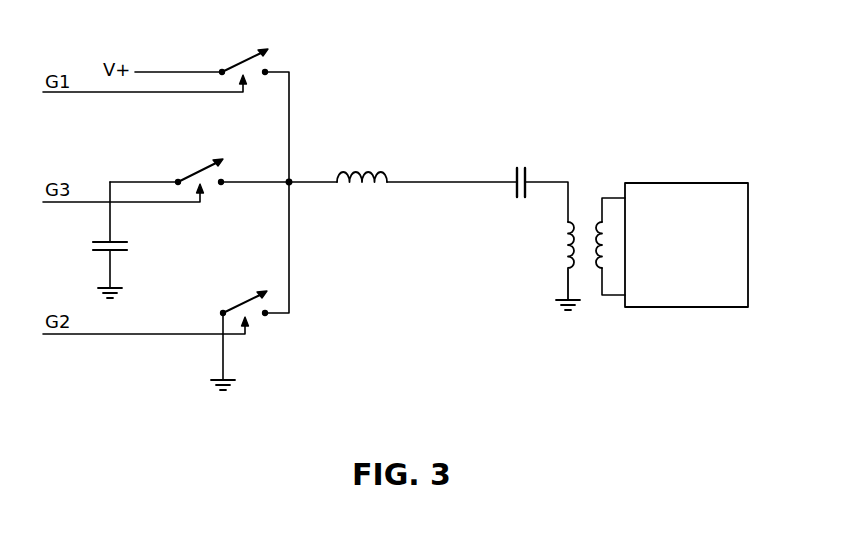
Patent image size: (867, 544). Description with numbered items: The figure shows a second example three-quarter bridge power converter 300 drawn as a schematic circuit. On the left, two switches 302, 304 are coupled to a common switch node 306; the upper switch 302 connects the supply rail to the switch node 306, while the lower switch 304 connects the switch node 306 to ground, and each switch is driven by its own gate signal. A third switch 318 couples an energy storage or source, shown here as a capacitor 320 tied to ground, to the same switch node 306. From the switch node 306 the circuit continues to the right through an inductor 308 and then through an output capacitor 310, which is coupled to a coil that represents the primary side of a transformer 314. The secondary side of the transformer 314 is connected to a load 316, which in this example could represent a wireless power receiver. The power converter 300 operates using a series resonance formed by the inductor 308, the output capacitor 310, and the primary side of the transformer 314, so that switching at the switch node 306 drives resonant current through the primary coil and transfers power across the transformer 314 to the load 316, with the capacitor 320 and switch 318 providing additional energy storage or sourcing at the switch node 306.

The three-quarter bridge power converter 300 is at (611, 66).
The switch 302 is at (240, 59).
The switch 304 is at (242, 300).
The switch node 306 is at (290, 184).
The inductor 308 is at (381, 170).
The output capacitor 310 is at (514, 170).
The transformer 314 is at (585, 212).
The load 316 is at (694, 183).
The switch 318 is at (199, 166).
The capacitor 320 is at (121, 251).